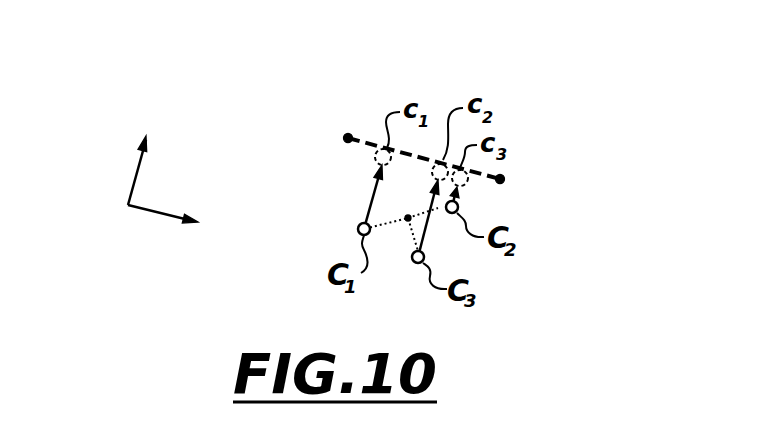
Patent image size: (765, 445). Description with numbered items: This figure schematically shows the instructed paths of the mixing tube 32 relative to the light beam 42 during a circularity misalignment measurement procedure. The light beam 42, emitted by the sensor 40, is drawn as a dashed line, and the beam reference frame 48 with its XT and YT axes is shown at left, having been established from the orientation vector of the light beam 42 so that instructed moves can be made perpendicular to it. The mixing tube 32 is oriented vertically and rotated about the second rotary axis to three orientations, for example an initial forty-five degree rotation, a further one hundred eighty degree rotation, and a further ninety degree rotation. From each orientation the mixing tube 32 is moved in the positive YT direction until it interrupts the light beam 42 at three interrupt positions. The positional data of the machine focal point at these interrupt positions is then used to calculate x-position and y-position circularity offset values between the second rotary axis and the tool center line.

The mixing tube 32 is at (358, 224).
The sensor 40 is at (503, 176).
The light beam 42 is at (368, 142).
The beam reference frame 48 is at (132, 178).